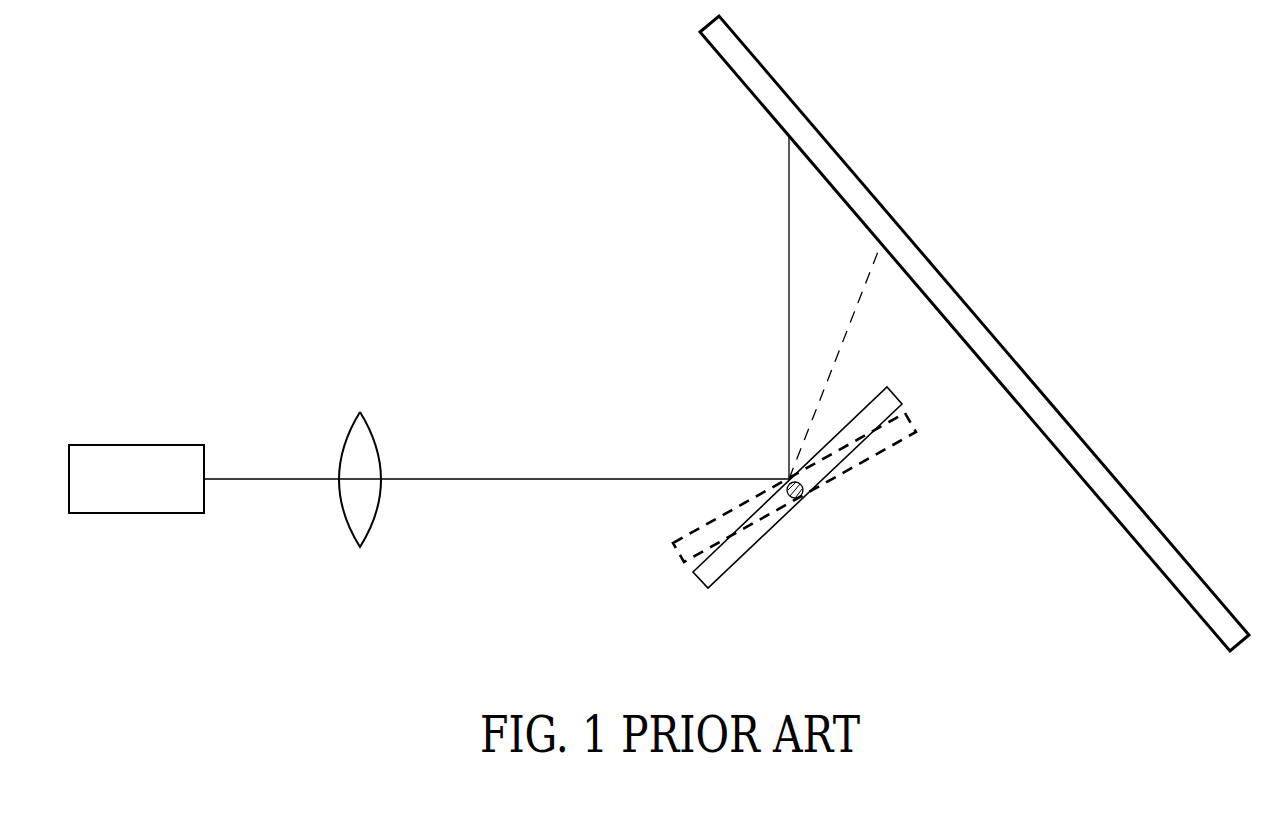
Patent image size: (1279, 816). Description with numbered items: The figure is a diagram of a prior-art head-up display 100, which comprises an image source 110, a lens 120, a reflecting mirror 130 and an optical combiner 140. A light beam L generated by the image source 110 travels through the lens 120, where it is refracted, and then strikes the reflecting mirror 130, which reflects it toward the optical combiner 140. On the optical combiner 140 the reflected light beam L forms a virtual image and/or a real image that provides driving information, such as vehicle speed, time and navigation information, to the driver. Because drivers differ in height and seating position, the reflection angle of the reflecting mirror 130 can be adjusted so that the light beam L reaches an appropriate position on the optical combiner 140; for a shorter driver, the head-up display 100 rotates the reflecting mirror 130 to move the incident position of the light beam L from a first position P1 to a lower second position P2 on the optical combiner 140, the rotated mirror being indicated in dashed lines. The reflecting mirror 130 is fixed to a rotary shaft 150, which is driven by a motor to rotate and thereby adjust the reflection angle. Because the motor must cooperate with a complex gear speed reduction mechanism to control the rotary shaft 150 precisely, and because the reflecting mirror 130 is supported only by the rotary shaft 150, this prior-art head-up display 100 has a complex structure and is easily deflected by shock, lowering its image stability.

The head-up display 100 is at (355, 122).
The image source 110 is at (143, 445).
The light beam L is at (284, 452).
The lens 120 is at (352, 540).
The reflecting mirror 130 is at (701, 585).
The rotary shaft 150 is at (808, 492).
The optical combiner 140 is at (1170, 587).
The first position P1 is at (789, 136).
The second position P2 is at (877, 258).